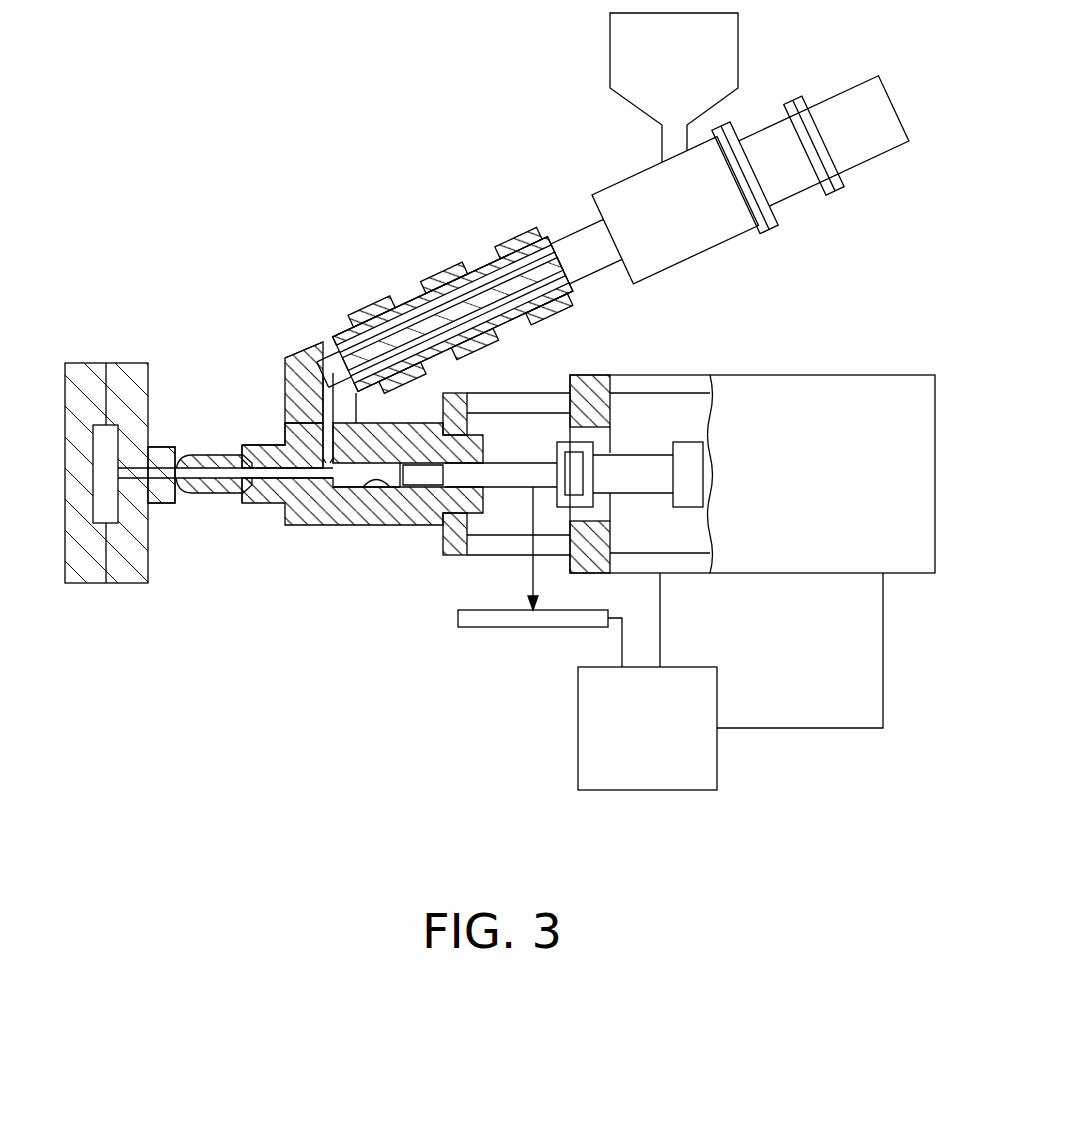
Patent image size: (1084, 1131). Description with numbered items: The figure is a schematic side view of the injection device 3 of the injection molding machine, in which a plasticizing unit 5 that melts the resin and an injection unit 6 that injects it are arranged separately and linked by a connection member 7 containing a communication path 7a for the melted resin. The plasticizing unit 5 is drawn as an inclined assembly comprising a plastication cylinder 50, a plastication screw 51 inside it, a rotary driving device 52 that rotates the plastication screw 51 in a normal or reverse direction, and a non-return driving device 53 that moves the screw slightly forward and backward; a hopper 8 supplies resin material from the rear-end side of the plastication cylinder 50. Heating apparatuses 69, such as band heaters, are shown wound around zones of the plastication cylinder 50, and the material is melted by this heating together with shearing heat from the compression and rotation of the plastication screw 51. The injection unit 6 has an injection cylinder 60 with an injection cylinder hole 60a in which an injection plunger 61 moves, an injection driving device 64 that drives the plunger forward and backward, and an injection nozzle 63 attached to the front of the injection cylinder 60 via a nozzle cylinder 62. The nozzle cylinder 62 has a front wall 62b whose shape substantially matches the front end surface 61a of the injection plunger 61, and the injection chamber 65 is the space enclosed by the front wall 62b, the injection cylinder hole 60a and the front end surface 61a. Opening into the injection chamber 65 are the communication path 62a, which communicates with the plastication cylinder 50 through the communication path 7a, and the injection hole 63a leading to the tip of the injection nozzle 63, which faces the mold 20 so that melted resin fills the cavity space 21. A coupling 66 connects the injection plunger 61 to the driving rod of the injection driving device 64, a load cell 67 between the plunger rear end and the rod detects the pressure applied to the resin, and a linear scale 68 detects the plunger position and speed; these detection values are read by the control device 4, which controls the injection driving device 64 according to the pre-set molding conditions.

The injection device 3 is at (535, 140).
The control device 4 is at (578, 762).
The plasticizing unit 5 is at (470, 246).
The injection unit 6 is at (335, 620).
The connection member 7 is at (305, 355).
The communication path 7a is at (285, 388).
The hopper 8 is at (742, 20).
The mold 20 is at (108, 362).
The cavity space 21 is at (137, 585).
The plastication cylinder 50 is at (398, 306).
The plastication screw 51 is at (432, 323).
The rotary driving device 52 is at (870, 150).
The non-return driving device 53 is at (785, 195).
The injection cylinder 60 is at (425, 527).
The injection cylinder hole 60a is at (378, 488).
The injection plunger 61 is at (418, 465).
The front end surface 61a is at (392, 455).
The nozzle cylinder 62 is at (318, 527).
The communication path 62a is at (287, 432).
The front wall 62b is at (362, 527).
The injection nozzle 63 is at (218, 493).
The injection hole 63a is at (284, 503).
The injection driving device 64 is at (792, 575).
The injection chamber 65 is at (395, 490).
The coupling 66 is at (556, 440).
The load cell 67 is at (550, 455).
The linear scale 68 is at (490, 628).
The heating apparatuses 69 is at (514, 238).